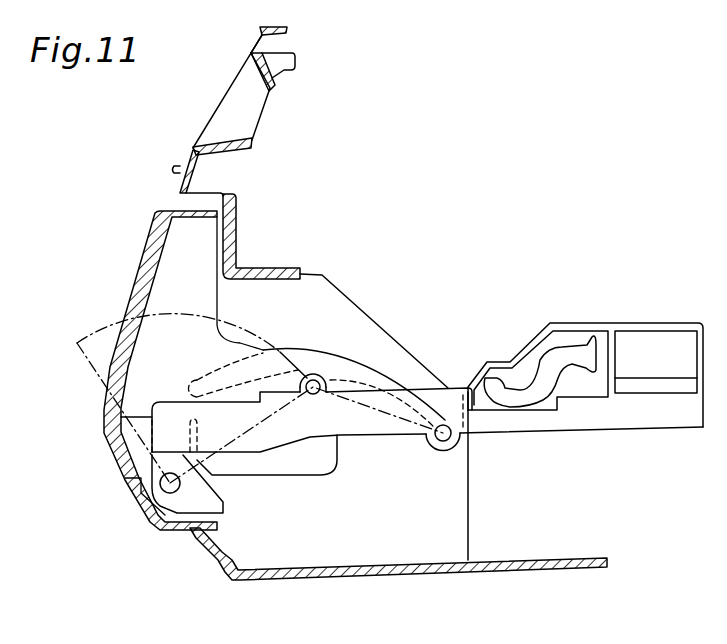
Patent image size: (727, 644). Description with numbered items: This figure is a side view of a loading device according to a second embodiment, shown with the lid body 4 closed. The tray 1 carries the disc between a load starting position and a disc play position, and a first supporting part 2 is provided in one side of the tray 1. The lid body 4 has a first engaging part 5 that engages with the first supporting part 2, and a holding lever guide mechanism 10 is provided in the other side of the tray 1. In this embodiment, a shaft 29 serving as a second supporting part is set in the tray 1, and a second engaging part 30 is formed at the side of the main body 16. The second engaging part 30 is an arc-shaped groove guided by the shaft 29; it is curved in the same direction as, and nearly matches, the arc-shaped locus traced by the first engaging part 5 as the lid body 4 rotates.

The tray 1 is at (520, 421).
The first supporting part 2 is at (311, 382).
The lid body 4 is at (140, 259).
The first engaging part 5 is at (334, 371).
The holding lever guide mechanism 10 is at (550, 363).
The main body 16 is at (247, 573).
The shaft 29 is at (450, 440).
The second engaging part 30 is at (390, 377).